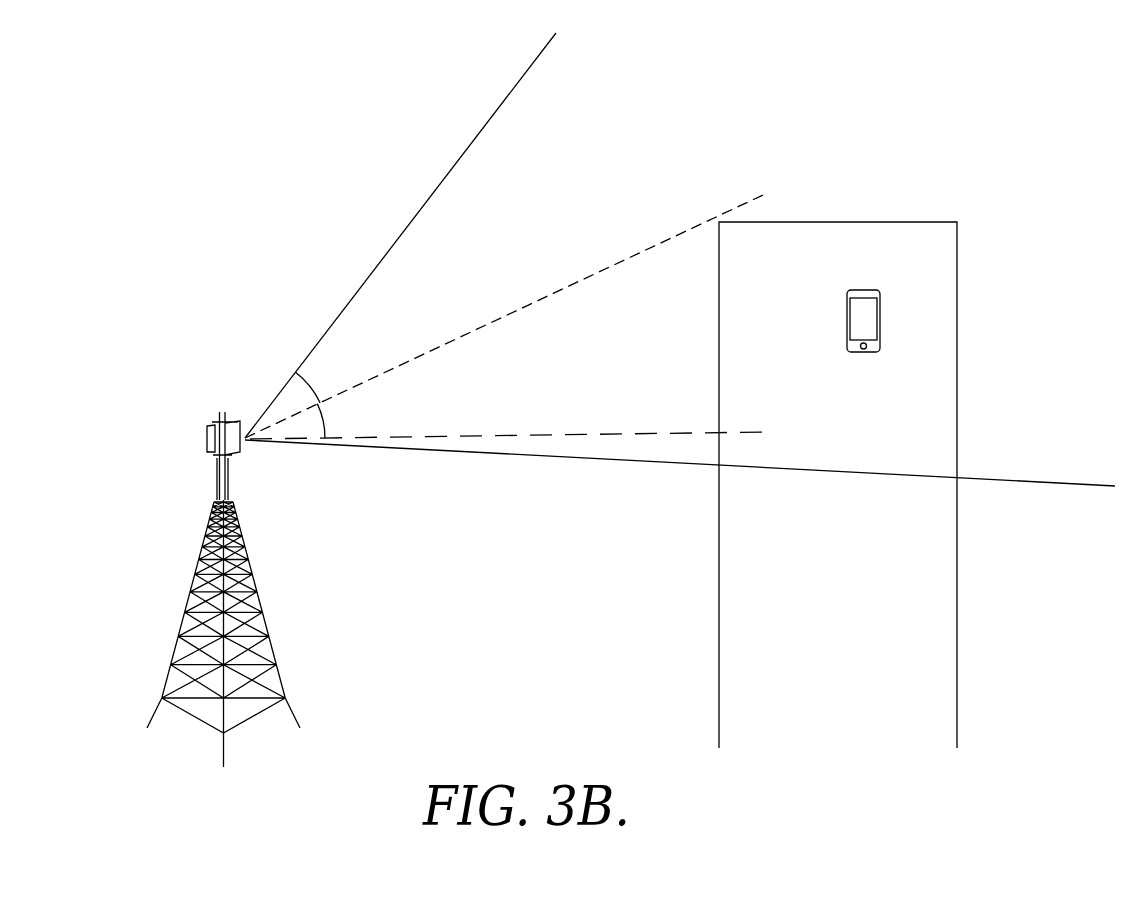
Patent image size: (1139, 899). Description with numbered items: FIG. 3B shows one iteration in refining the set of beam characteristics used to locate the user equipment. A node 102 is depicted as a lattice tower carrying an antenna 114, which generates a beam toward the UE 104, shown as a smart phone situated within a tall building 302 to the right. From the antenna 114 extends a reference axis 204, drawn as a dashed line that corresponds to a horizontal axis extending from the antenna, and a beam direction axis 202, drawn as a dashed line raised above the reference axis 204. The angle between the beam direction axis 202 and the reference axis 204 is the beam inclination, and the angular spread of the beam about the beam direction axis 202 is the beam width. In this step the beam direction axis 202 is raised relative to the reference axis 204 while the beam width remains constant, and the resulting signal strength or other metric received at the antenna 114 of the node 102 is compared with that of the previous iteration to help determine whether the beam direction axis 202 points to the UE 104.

The node 102 is at (202, 575).
The antenna 114 is at (203, 441).
The beam direction axis 202 is at (387, 372).
The reference axis 204 is at (598, 433).
The building 302 is at (920, 222).
The UE 104 is at (847, 323).